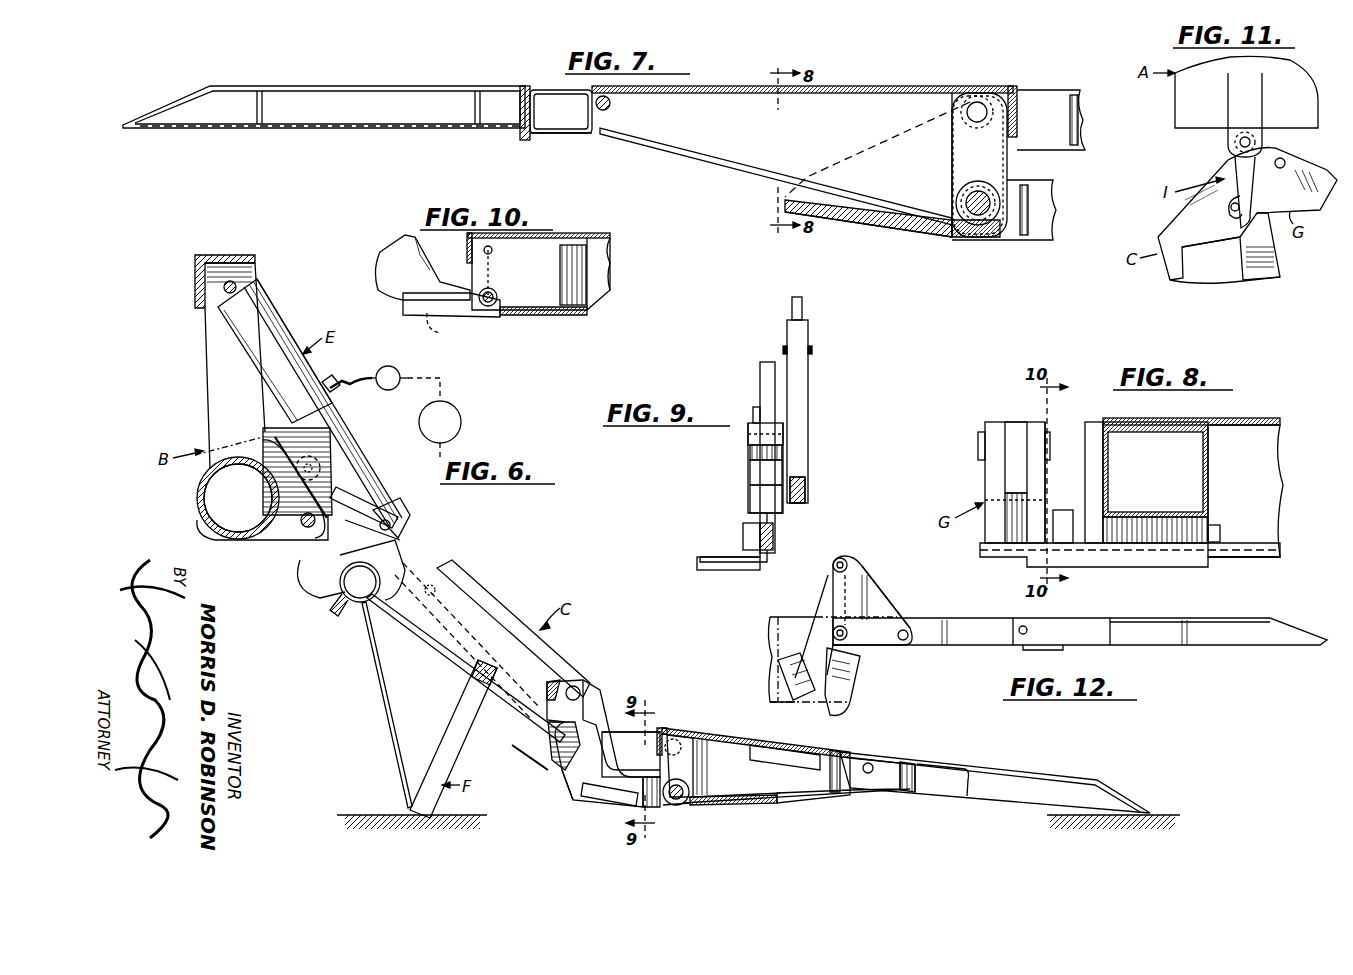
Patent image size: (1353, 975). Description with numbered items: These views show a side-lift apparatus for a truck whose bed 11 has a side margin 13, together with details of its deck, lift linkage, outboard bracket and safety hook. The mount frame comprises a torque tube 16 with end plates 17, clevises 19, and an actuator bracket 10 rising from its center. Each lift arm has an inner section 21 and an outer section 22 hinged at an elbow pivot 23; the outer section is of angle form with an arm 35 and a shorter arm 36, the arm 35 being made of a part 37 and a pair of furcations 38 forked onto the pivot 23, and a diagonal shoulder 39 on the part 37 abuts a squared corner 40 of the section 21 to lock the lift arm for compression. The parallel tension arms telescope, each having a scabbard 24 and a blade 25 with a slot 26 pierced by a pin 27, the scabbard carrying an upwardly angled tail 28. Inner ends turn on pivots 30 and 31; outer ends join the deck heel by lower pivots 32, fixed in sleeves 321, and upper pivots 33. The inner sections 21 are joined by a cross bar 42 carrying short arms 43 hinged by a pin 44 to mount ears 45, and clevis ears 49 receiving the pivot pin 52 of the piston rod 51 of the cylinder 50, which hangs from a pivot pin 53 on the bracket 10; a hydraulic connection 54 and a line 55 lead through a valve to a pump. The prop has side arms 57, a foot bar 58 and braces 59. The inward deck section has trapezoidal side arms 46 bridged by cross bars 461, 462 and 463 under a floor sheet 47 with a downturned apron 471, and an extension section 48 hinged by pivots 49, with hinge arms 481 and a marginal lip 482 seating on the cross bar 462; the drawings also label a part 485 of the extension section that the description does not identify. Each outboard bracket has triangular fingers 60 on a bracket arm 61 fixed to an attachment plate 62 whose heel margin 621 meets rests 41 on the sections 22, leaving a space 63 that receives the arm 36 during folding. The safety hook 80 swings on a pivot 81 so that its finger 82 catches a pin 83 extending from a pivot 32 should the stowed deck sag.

In FIG. 6, the actuator bracket 10 is at (222, 383).
In FIG. 11, the bed 11 is at (1290, 72).
In FIG. 12, the bed 11 is at (780, 615).
In FIG. 11, the side margin 13 is at (1175, 92).
In FIG. 6, the torque tube 16 is at (204, 510).
In FIG. 6, the end plates 17 is at (197, 488).
In FIG. 6, the clevises 19 is at (318, 455).
In FIG. 6, the inner lift arm section 21 is at (460, 670).
In FIG. 9, the inner lift arm section 21 is at (762, 376).
In FIG. 6, the outer lift arm section 22 is at (555, 776).
In FIG. 9, the outer lift arm section 22 is at (745, 510).
In FIG. 12, the outer lift arm section 22 is at (862, 683).
In FIG. 6, the elbow pivot 23 is at (597, 678).
In FIG. 9, the elbow pivot 23 is at (750, 440).
In FIG. 6, the scabbard 24 is at (488, 580).
In FIG. 9, the scabbard 24 is at (805, 386).
In FIG. 6, the blade 25 is at (430, 585).
In FIG. 9, the blade 25 is at (802, 306).
In FIG. 6, the longitudinal slot 26 is at (376, 510).
In FIG. 6, the pin 27 is at (470, 600).
In FIG. 9, the pin 27 is at (812, 350).
In FIG. 7, the scabbard tail 28 is at (1048, 94).
In FIG. 11, the scabbard tail 28 is at (1268, 256).
In FIG. 10, the scabbard tail 28 is at (422, 267).
In FIG. 6, the scabbard tail 28 is at (662, 722).
In FIG. 9, the scabbard tail 28 is at (805, 508).
In FIG. 8, the scabbard tail 28 is at (1015, 475).
In FIG. 12, the scabbard tail 28 is at (826, 593).
In FIG. 6, the pivots 30 is at (325, 538).
In FIG. 6, the pivots 31 is at (322, 468).
In FIG. 7, the lower pivots 32 is at (992, 203).
In FIG. 11, the lower pivots 32 is at (1286, 160).
In FIG. 10, the lower pivots 32 is at (497, 297).
In FIG. 6, the lower pivots 32 is at (688, 792).
In FIG. 8, the lower pivots 32 is at (1108, 496).
In FIG. 12, the lower pivots 32 is at (848, 633).
In FIG. 7, the sleeves 321 is at (979, 225).
In FIG. 6, the sleeves 321 is at (688, 786).
In FIG. 8, the sleeves 321 is at (1220, 530).
In FIG. 7, the upper pivots 33 is at (966, 112).
In FIG. 10, the upper pivots 33 is at (495, 252).
In FIG. 8, the upper pivots 33 is at (978, 444).
In FIG. 12, the upper pivots 33 is at (848, 563).
In FIG. 6, the arm 35 is at (608, 706).
In FIG. 9, the arm 35 is at (752, 492).
In FIG. 7, the shorter arm 36 is at (1050, 222).
In FIG. 11, the shorter arm 36 is at (1222, 164).
In FIG. 10, the shorter arm 36 is at (480, 314).
In FIG. 6, the shorter arm 36 is at (645, 810).
In FIG. 9, the shorter arm 36 is at (773, 545).
In FIG. 8, the shorter arm 36 is at (1075, 496).
In FIG. 6, the part 37 is at (568, 796).
In FIG. 9, the part 37 is at (770, 520).
In FIG. 6, the furcations 38 is at (550, 694).
In FIG. 9, the furcations 38 is at (752, 470).
In FIG. 6, the diagonal shoulder 39 is at (540, 742).
In FIG. 6, the squared corner 40 is at (560, 726).
In FIG. 9, the squared corner 40 is at (752, 455).
In FIG. 10, the rests 41 is at (440, 328).
In FIG. 6, the rests 41 is at (606, 799).
In FIG. 9, the rests 41 is at (745, 535).
In FIG. 6, the cross bar 42 is at (338, 596).
In FIG. 7, the short arms 43 is at (561, 111).
In FIG. 6, the short arms 43 is at (312, 592).
In FIG. 6, the hinge pin 44 is at (290, 548).
In FIG. 6, the mount ears 45 is at (262, 537).
In FIG. 7, the side arms 46 is at (720, 170).
In FIG. 10, the side arms 46 is at (600, 272).
In FIG. 6, the side arms 46 is at (830, 792).
In FIG. 8, the side arms 46 is at (1208, 494).
In FIG. 6, the cross bar 461 is at (775, 765).
In FIG. 7, the cross bar 462 is at (551, 136).
In FIG. 6, the cross bar 462 is at (908, 793).
In FIG. 7, the cross bar 463 is at (1005, 152).
In FIG. 6, the cross bar 463 is at (666, 805).
In FIG. 8, the cross bar 463 is at (1243, 558).
In FIG. 7, the floor sheet 47 is at (886, 92).
In FIG. 10, the floor sheet 47 is at (568, 236).
In FIG. 6, the floor sheet 47 is at (754, 730).
In FIG. 8, the floor sheet 47 is at (1271, 420).
In FIG. 7, the apron 471 is at (1017, 122).
In FIG. 10, the apron 471 is at (467, 242).
In FIG. 6, the apron 471 is at (676, 728).
In FIG. 7, the outward extension section 48 is at (351, 92).
In FIG. 6, the outward extension section 48 is at (1033, 768).
In FIG. 12, the outward extension section 48 is at (1080, 631).
In FIG. 6, the hinge arms 481 is at (968, 770).
In FIG. 12, the hinge arms 481 is at (1083, 638).
In FIG. 7, the transverse marginal lip 482 is at (526, 90).
In FIG. 6, the transverse marginal lip 482 is at (914, 766).
In FIG. 12, the blade tip 485 is at (1214, 644).
In FIG. 6, the hinge pivots 49 is at (405, 540).
In FIG. 12, the hinge pivots 49 is at (1020, 642).
In FIG. 6, the cylinder 50 is at (285, 325).
In FIG. 6, the piston rod 51 is at (333, 420).
In FIG. 6, the pivot pin 52 is at (399, 518).
In FIG. 6, the pivot pin 53 is at (196, 292).
In FIG. 6, the hydraulic connection 54 is at (350, 378).
In FIG. 6, the line 55 is at (445, 392).
In FIG. 6, the side arms 57 is at (460, 725).
In FIG. 9, the side arms 57 is at (768, 566).
In FIG. 6, the foot bar 58 is at (405, 812).
In FIG. 9, the foot bar 58 is at (697, 563).
In FIG. 6, the brace 59 is at (395, 752).
In FIG. 7, the bracket fingers 60 is at (856, 148).
In FIG. 8, the bracket fingers 60 is at (1030, 422).
In FIG. 7, the outboard bracket arm 61 is at (860, 224).
In FIG. 10, the outboard bracket arm 61 is at (550, 308).
In FIG. 6, the outboard bracket arm 61 is at (727, 806).
In FIG. 8, the outboard bracket arm 61 is at (1015, 560).
In FIG. 12, the outboard bracket arm 61 is at (884, 592).
In FIG. 7, the attachment plate 62 is at (785, 200).
In FIG. 10, the attachment plate 62 is at (572, 275).
In FIG. 6, the attachment plate 62 is at (771, 806).
In FIG. 8, the attachment plate 62 is at (1098, 432).
In FIG. 10, the heel margin 621 is at (493, 276).
In FIG. 8, the space 63 is at (1070, 432).
In FIG. 11, the hook 80 is at (1250, 192).
In FIG. 11, the pivot 81 is at (1235, 143).
In FIG. 11, the hook finger 82 is at (1235, 244).
In FIG. 11, the pin 83 is at (1230, 208).